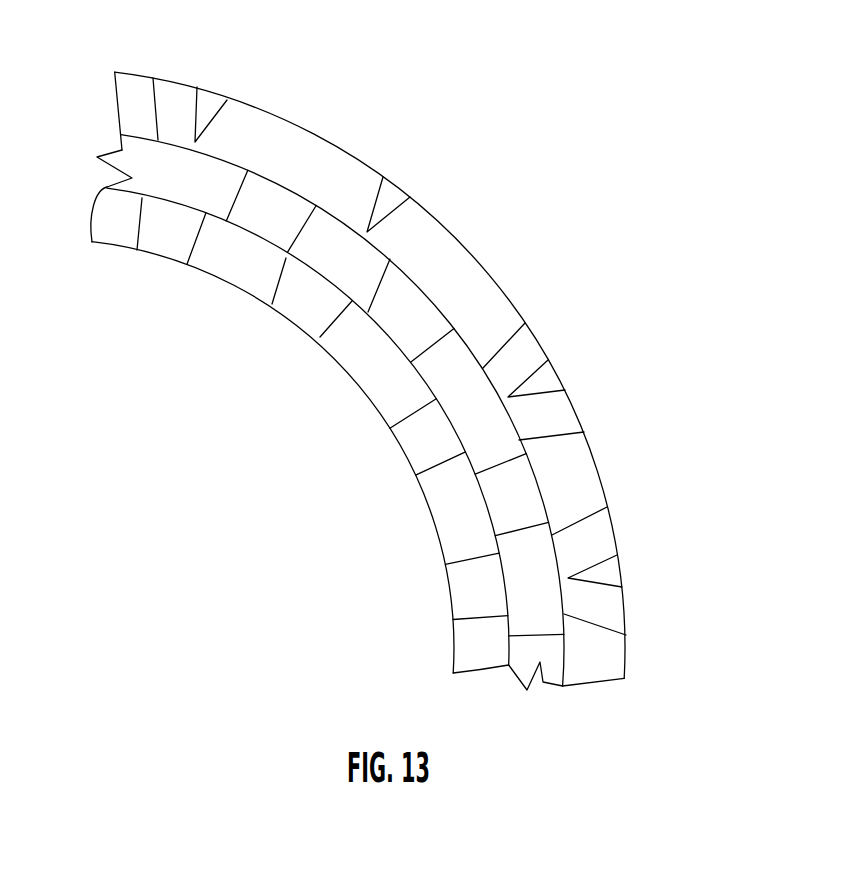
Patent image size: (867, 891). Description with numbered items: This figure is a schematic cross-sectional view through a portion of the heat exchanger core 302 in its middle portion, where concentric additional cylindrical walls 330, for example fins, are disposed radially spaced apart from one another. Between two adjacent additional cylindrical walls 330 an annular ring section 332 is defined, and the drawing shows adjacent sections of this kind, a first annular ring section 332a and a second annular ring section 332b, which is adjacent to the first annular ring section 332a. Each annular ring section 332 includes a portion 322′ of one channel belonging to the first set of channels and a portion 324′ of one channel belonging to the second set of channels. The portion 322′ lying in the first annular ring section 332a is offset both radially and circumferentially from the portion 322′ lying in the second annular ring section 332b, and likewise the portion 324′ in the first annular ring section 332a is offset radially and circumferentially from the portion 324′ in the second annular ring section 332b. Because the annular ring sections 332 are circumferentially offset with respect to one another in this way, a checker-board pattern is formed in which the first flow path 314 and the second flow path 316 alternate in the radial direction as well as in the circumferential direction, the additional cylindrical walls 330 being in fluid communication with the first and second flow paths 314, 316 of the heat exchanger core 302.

The heat exchanger core 302 is at (664, 638).
The first flow path 314 is at (170, 84).
The second flow path 316 is at (149, 161).
The portion of channel from first set of channels 322′ is at (181, 127).
The portion of channel from second set of channels 324′ is at (213, 262).
The additional cylindrical walls 330 is at (438, 310).
The annular ring sections 332 is at (348, 213).
The first annular ring section 332a is at (207, 183).
The second annular ring section 332b is at (118, 232).